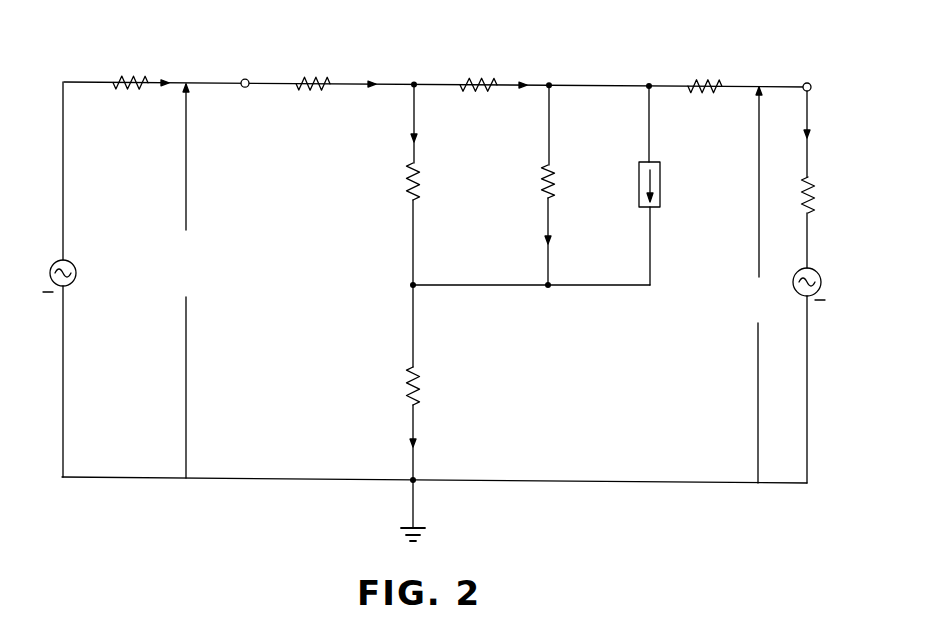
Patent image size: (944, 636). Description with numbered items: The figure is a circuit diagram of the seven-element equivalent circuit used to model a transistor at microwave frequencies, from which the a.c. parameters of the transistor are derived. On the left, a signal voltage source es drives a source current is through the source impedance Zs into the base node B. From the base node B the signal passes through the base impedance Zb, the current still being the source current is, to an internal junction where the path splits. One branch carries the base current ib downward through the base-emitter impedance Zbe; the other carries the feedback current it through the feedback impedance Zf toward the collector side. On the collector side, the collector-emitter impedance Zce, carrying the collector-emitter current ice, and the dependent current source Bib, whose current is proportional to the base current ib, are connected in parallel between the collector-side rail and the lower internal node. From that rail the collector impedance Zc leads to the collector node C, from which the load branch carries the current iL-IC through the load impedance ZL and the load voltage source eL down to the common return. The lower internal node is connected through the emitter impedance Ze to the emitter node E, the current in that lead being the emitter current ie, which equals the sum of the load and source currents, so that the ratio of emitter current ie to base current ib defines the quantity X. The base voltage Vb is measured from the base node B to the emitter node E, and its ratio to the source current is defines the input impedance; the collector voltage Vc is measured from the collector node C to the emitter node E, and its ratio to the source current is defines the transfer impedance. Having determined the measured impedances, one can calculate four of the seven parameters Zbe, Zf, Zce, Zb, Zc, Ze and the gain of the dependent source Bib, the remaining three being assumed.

The source impedance Zs is at (143, 78).
The source current is is at (168, 79).
The base node B is at (243, 79).
The base impedance Zb is at (296, 80).
The feedback impedance Zf is at (483, 79).
The feedback current it is at (523, 80).
The collector impedance Zc is at (693, 81).
The collector node C is at (810, 82).
The load current minus collector current iL-IC is at (810, 133).
The base current ib is at (415, 139).
The base-emitter impedance Zbe is at (418, 193).
The collector-emitter impedance Zce is at (541, 183).
The collector-emitter current ice is at (552, 240).
The dependent current source Bib is at (660, 190).
The collector voltage Vc is at (759, 285).
The load impedance ZL is at (812, 206).
The load voltage source eL is at (801, 272).
The signal voltage source es is at (76, 272).
The base voltage Vb is at (188, 281).
The emitter impedance Ze is at (418, 378).
The emitter current ie is at (418, 445).
The emitter node E is at (79, 462).